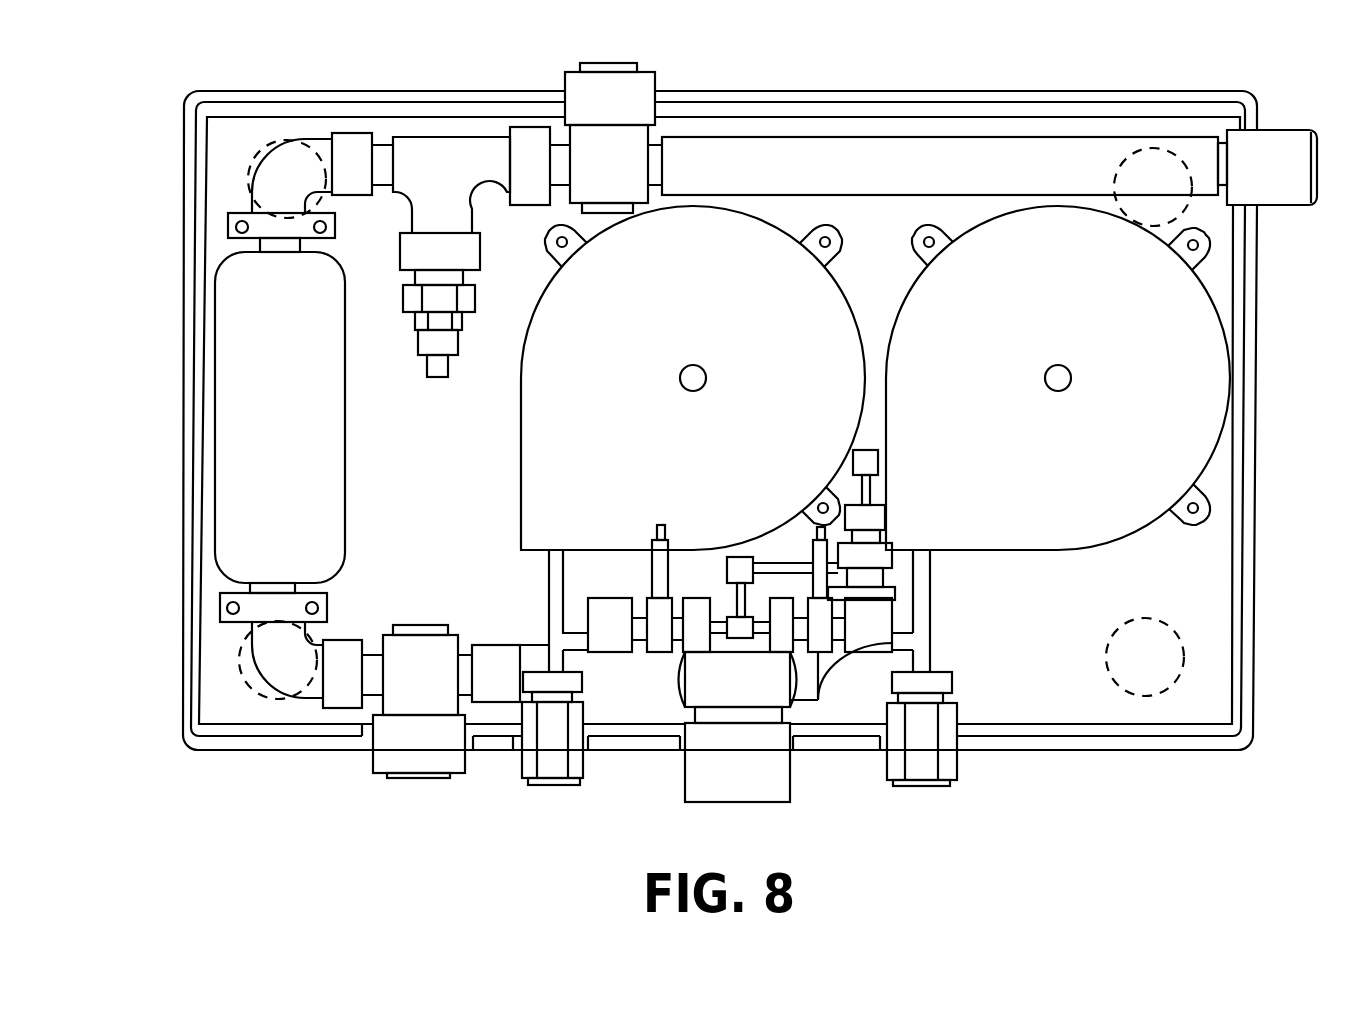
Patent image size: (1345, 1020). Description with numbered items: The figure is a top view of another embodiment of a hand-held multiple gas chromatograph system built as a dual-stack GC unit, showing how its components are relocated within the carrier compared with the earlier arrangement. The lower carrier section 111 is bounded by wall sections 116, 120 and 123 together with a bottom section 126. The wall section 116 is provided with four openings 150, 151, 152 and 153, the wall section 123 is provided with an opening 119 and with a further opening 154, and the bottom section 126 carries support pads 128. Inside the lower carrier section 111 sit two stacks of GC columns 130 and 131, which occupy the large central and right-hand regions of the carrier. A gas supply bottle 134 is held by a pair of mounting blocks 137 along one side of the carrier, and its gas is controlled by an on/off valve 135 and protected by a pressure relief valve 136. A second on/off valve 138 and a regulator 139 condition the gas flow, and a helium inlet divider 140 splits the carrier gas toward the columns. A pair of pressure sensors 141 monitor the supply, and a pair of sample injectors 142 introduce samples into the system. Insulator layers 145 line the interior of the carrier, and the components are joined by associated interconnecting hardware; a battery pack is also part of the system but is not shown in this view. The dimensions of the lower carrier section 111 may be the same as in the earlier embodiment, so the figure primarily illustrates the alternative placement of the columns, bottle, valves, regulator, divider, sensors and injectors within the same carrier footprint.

The lower carrier section 111 is at (880, 74).
The wall section 116 is at (1108, 752).
The opening 119 is at (1253, 128).
The wall section 120 is at (183, 440).
The wall section 123 is at (463, 91).
The bottom section 126 is at (445, 485).
The support pads 128 is at (270, 140).
The stack of GC columns 130 is at (718, 323).
The stack of GC columns 131 is at (1082, 323).
The gas supply bottle 134 is at (300, 375).
The on/off valve 135 is at (628, 173).
The pressure relief valve 136 is at (432, 377).
The mounting blocks 137 is at (333, 240).
The on/off valve 138 is at (436, 690).
The regulator 139 is at (758, 788).
The He inlet divider 140 is at (758, 700).
The pressure sensors 141 is at (657, 527).
The sample injectors 142 is at (522, 765).
The insulator layers 145 is at (1233, 590).
The opening 150 is at (373, 740).
The opening 151 is at (588, 750).
The opening 152 is at (680, 748).
The opening 153 is at (880, 748).
The opening 154 is at (662, 92).